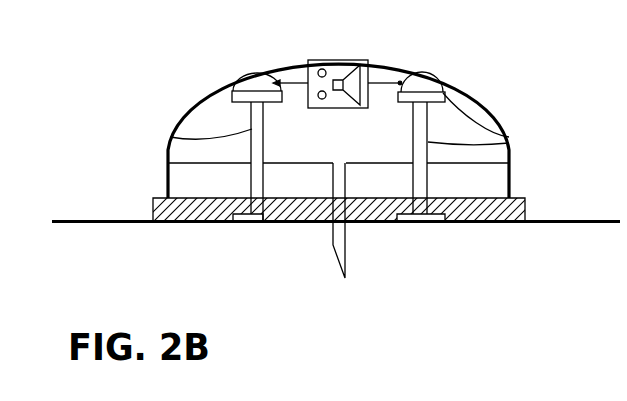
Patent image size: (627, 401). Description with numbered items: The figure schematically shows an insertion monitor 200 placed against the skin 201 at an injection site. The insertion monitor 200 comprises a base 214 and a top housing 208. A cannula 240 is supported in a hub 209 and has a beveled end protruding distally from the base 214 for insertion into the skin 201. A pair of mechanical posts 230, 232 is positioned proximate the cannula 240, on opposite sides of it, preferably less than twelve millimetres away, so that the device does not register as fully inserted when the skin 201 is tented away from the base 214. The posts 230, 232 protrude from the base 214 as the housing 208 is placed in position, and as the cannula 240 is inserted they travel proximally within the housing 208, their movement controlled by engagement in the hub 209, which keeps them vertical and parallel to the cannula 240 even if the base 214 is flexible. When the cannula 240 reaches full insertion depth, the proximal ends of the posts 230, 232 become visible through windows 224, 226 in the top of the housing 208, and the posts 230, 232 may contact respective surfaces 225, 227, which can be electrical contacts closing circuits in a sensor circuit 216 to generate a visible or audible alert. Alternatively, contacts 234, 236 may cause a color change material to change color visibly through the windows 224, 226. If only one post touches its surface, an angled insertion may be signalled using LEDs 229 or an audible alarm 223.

The insertion monitor 200 is at (125, 58).
The skin 201 is at (110, 221).
The housing 208 is at (483, 100).
The hub 209 is at (493, 180).
The base 214 is at (498, 221).
The sensor circuit 216 is at (336, 66).
The audible alarm 223 is at (368, 60).
The window 224 is at (240, 77).
The surface 225 is at (283, 62).
The window 226 is at (430, 66).
The surface 227 is at (399, 82).
The LEDs 229 is at (318, 68).
The mechanical post 230 is at (172, 138).
The mechanical post 232 is at (509, 143).
The contact 234 is at (232, 93).
The contact 236 is at (509, 137).
The cannula 240 is at (343, 257).